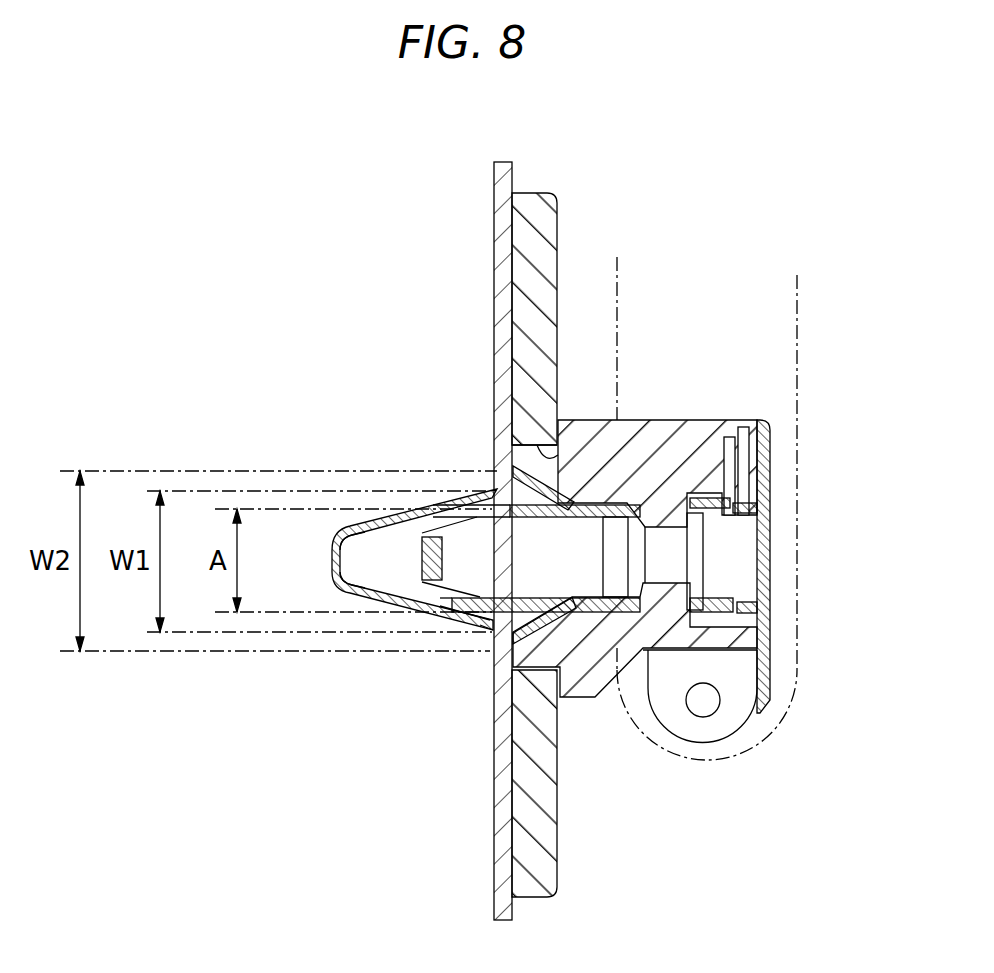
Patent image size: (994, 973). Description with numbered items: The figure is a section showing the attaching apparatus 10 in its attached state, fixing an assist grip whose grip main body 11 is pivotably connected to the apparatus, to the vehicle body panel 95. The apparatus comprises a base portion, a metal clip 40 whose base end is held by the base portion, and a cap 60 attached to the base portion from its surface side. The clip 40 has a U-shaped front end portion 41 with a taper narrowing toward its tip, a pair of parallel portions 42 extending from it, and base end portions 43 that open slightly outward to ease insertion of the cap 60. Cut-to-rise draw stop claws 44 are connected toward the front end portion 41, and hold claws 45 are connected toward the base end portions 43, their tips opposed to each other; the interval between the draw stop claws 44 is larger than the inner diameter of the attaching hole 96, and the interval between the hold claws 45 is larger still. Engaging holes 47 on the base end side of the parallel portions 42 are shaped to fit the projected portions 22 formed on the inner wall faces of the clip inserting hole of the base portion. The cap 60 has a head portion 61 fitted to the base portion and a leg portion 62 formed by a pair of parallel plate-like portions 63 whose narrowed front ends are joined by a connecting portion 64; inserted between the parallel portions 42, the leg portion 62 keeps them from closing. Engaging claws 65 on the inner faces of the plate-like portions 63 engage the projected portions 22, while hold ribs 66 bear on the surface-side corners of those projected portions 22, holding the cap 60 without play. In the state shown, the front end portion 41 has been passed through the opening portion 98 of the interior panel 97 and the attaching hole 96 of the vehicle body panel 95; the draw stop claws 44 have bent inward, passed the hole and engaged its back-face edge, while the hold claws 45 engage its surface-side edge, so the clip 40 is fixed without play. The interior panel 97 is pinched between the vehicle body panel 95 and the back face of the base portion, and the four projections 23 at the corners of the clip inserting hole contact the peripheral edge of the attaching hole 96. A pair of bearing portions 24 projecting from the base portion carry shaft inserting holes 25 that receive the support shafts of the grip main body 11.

The attaching apparatus 10 is at (344, 461).
The grip main body 11 is at (800, 323).
The projected portion 22 is at (674, 512).
The projection 23 is at (532, 617).
The bearing portion 24 is at (745, 730).
The shaft inserting hole 25 is at (703, 707).
The clip 40 is at (348, 600).
The front end portion 41 is at (330, 545).
The parallel portion 42 is at (443, 607).
The base end portion 43 is at (725, 519).
The draw stop claw 44 is at (490, 632).
The hold claw 45 is at (480, 622).
The engaging hole 47 is at (637, 650).
The cap 60 is at (696, 555).
The head portion 61 is at (772, 465).
The leg portion 62 is at (400, 530).
The plate-like portion 63 is at (452, 605).
The connecting portion 64 is at (410, 580).
The engaging claw 65 is at (636, 562).
The hold rib 66 is at (735, 577).
The vehicle body panel 95 is at (493, 258).
The attaching hole 96 is at (492, 480).
The interior panel 97 is at (560, 240).
The opening portion 98 is at (563, 448).